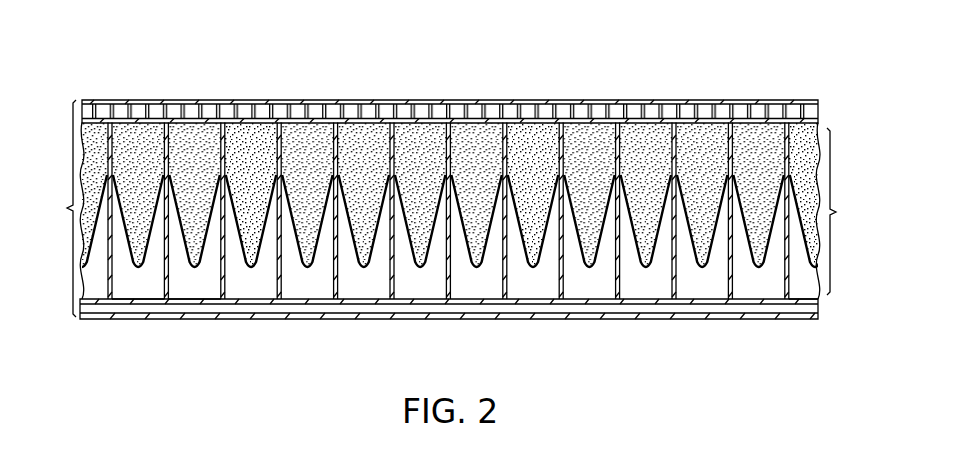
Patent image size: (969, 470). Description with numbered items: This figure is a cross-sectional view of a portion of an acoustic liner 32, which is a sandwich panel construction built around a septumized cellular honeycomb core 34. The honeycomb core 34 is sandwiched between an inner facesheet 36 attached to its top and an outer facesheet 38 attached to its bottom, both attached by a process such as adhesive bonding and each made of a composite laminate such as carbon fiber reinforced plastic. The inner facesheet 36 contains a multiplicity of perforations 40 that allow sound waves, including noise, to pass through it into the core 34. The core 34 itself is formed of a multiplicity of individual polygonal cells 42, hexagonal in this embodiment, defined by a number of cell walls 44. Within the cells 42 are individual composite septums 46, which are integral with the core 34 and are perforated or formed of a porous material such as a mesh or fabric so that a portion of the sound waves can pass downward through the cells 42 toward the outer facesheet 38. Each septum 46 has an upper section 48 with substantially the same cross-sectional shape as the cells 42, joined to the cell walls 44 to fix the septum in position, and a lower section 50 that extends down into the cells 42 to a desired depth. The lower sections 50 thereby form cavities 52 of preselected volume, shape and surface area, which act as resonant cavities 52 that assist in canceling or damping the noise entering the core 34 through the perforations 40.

The acoustic liner 32 is at (56, 208).
The cellular honeycomb core 34 is at (840, 211).
The inner facesheet 36 is at (575, 98).
The outer facesheet 38 is at (707, 310).
The perforations 40 is at (390, 112).
The polygonal cells 42 is at (143, 292).
The cell walls 44 is at (567, 274).
The composite septums 46 is at (242, 128).
The upper section 48 is at (220, 146).
The lower section 50 is at (294, 254).
The cavities 52 is at (200, 292).